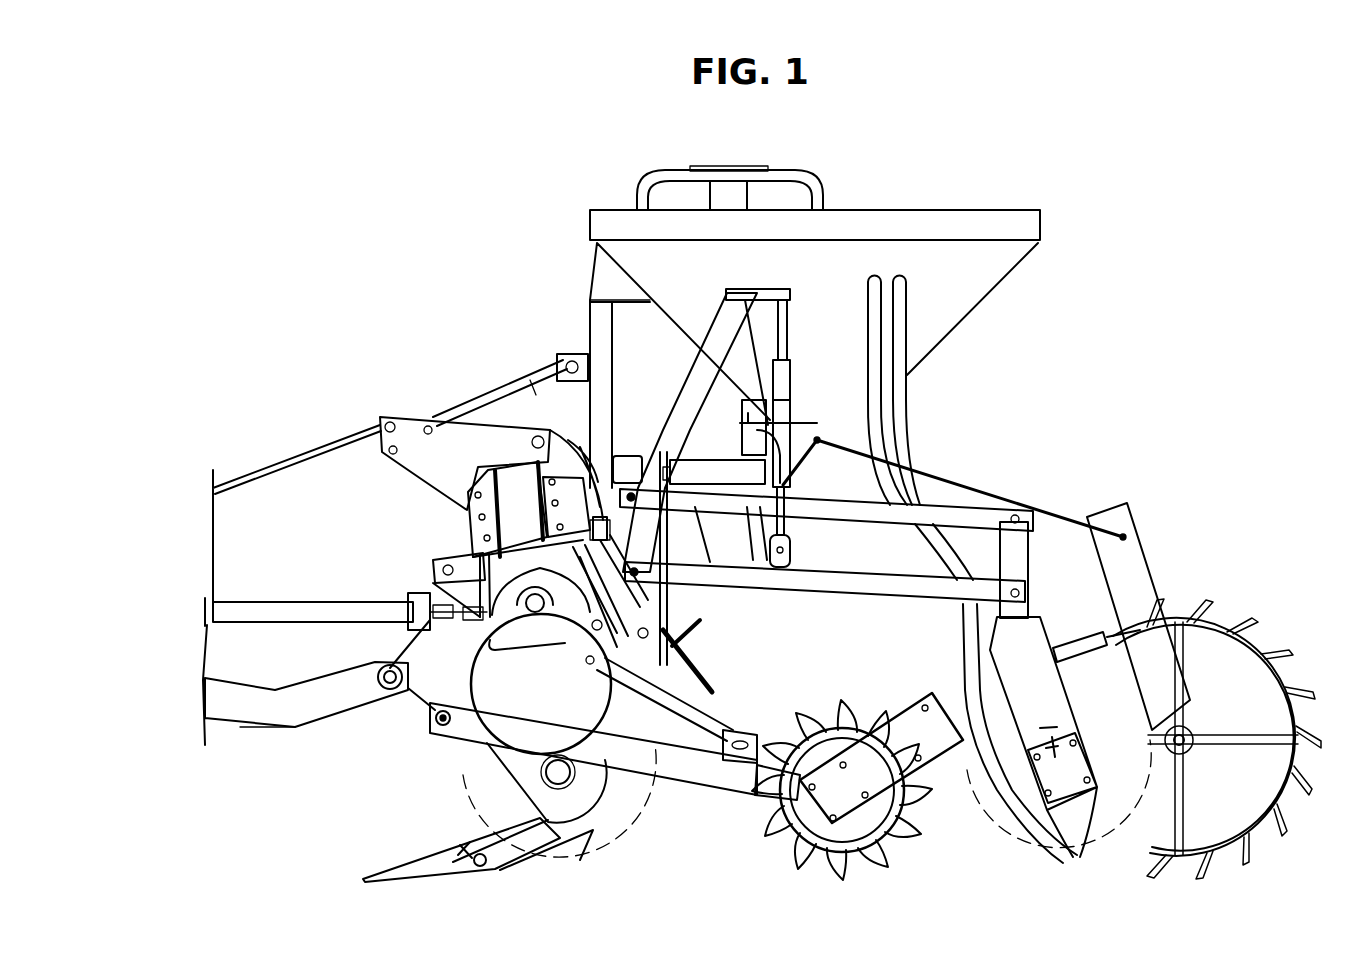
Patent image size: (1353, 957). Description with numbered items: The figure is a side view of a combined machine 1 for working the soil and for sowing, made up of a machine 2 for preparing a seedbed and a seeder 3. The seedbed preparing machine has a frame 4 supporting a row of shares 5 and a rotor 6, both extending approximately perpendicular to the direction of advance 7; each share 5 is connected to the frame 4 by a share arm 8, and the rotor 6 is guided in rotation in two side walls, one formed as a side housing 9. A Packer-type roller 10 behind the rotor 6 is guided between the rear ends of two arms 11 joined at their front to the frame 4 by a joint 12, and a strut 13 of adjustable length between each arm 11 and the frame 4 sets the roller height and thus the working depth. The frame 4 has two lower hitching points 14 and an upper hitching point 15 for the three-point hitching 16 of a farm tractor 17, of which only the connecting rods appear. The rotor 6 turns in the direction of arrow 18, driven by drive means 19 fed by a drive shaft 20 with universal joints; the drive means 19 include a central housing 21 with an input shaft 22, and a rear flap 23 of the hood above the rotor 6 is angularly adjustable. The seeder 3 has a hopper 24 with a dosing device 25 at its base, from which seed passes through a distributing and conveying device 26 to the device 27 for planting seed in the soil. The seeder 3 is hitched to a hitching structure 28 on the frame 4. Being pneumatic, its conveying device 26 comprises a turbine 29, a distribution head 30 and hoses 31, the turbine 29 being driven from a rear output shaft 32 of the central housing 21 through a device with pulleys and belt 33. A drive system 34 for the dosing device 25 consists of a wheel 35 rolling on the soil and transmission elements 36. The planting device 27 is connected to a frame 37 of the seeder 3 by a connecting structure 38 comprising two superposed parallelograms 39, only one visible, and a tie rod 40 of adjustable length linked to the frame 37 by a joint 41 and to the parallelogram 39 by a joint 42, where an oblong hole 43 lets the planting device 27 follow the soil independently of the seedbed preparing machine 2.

The combined machine 1 is at (483, 330).
The machine for preparing a seedbed 2 is at (410, 760).
The seeder 3 is at (981, 208).
The frame 4 is at (468, 523).
The share 5 is at (390, 870).
The rotor 6 is at (457, 768).
The direction of advance 7 is at (243, 312).
The share arm 8 is at (627, 805).
The side housing 9 is at (513, 776).
The roller 10 is at (836, 707).
The arm 11 is at (700, 775).
The joint 12 is at (436, 719).
The strut 13 is at (692, 656).
The lower hitching point 14 is at (387, 670).
The upper hitching point 15 is at (385, 420).
The three-point hitching 16 is at (262, 478).
The farm tractor 17 is at (246, 723).
The arrow 18 is at (453, 838).
The drive means 19 is at (545, 655).
The drive shaft 20 is at (283, 604).
The central housing 21 is at (520, 546).
The input shaft 22 is at (445, 585).
The rear flap 23 is at (683, 727).
The hopper 24 is at (988, 296).
The dosing device 25 is at (795, 486).
The distributing and conveying device 26 is at (700, 408).
The device for planting seed in the soil 27 is at (990, 807).
The hitching structure 28 is at (595, 470).
The turbine 29 is at (706, 514).
The distribution head 30 is at (727, 170).
The hose 31 is at (648, 190).
The rear output shaft 32 is at (595, 647).
The device with pulleys and belt 33 is at (667, 603).
The drive system 34 is at (1150, 540).
The wheel 35 is at (1253, 637).
The transmission elements 36 is at (1100, 511).
The frame 37 is at (707, 373).
The connecting structure 38 is at (848, 596).
The parallelogram 39 is at (853, 514).
The tie rod 40 is at (790, 390).
The joint 41 is at (790, 298).
The joint 42 is at (790, 558).
The oblong hole 43 is at (785, 530).